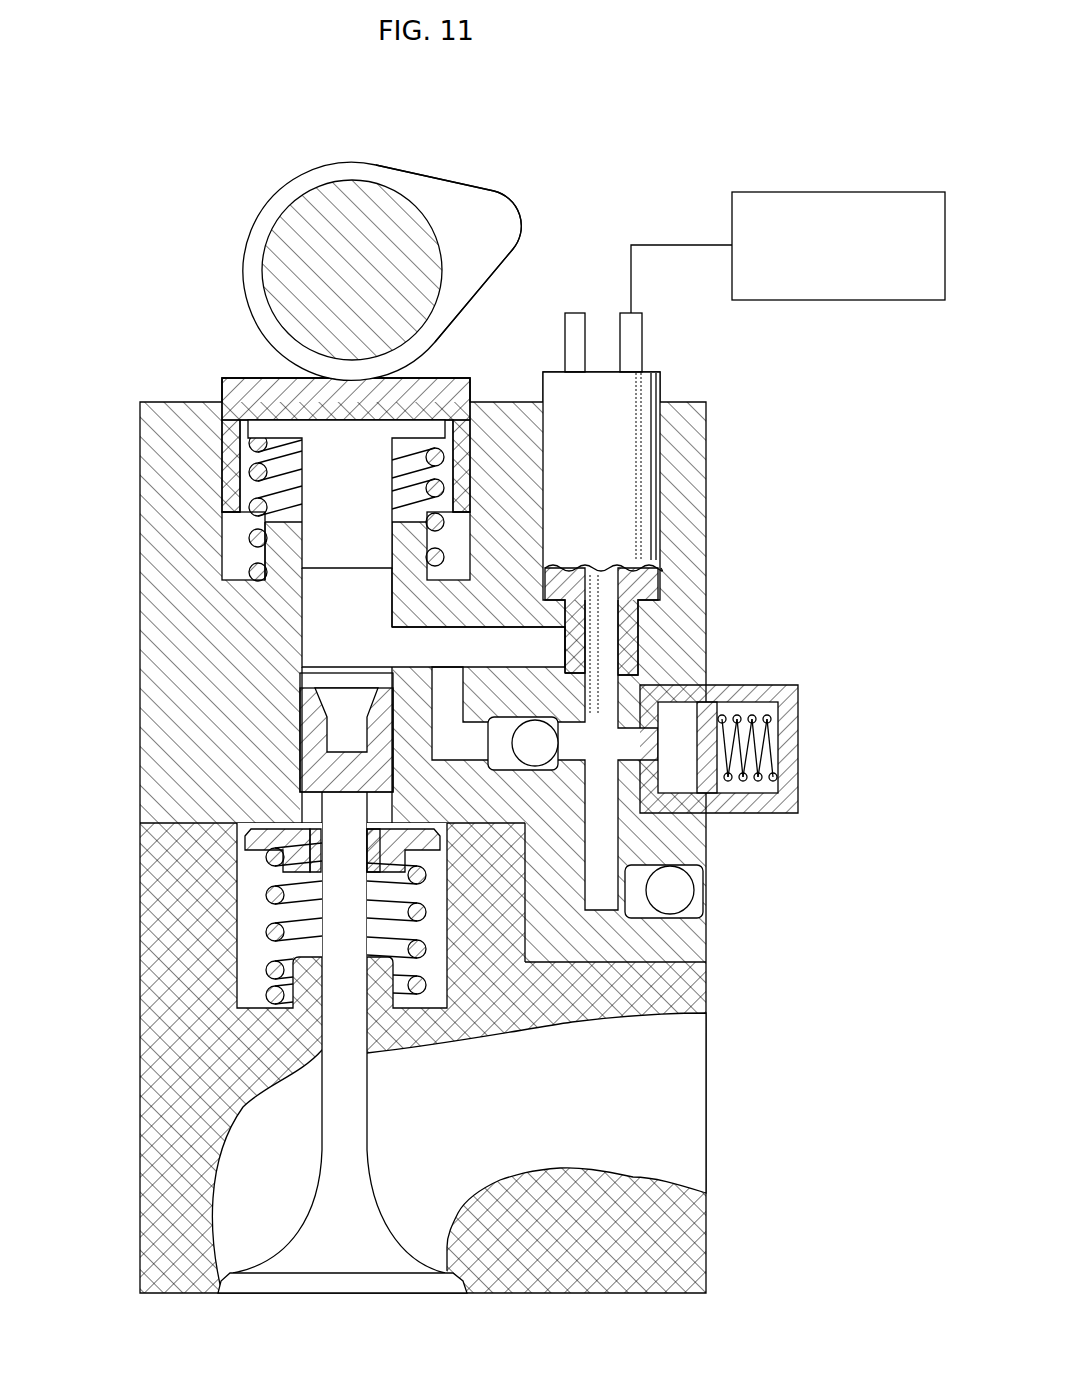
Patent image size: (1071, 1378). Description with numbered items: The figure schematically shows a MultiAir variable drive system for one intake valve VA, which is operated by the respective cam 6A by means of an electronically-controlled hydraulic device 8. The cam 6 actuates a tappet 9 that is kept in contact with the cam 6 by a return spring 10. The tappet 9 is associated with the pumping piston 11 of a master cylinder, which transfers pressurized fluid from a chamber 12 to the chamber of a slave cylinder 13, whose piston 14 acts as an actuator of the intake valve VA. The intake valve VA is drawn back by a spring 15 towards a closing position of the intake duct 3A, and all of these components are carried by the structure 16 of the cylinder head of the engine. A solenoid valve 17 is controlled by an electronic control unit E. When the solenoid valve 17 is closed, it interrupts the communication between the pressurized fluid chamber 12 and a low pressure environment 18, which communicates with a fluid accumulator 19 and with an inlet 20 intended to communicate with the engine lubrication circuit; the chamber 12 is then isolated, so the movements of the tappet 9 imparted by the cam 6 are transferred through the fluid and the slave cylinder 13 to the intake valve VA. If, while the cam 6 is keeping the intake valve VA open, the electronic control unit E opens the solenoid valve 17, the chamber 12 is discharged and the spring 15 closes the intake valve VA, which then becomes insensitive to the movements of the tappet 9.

The electronically-controlled hydraulic device 8 is at (113, 348).
The cam 6 is at (280, 207).
The cam 6A is at (483, 222).
The electronic control unit E is at (846, 212).
The tappet 9 is at (238, 385).
The return spring 10 is at (457, 470).
The pumping piston 11 is at (343, 537).
The pressurized fluid chamber 12 is at (315, 620).
The slave cylinder 13 is at (345, 728).
The piston 14 is at (323, 768).
The spring 15 is at (275, 930).
The structure of the cylinder head 16 is at (165, 527).
The solenoid valve 17 is at (630, 472).
The low pressure environment 18 is at (612, 742).
The fluid accumulator 19 is at (672, 745).
The inlet 20 is at (638, 903).
The intake valve VA is at (380, 1140).
The intake duct 3A is at (420, 1240).